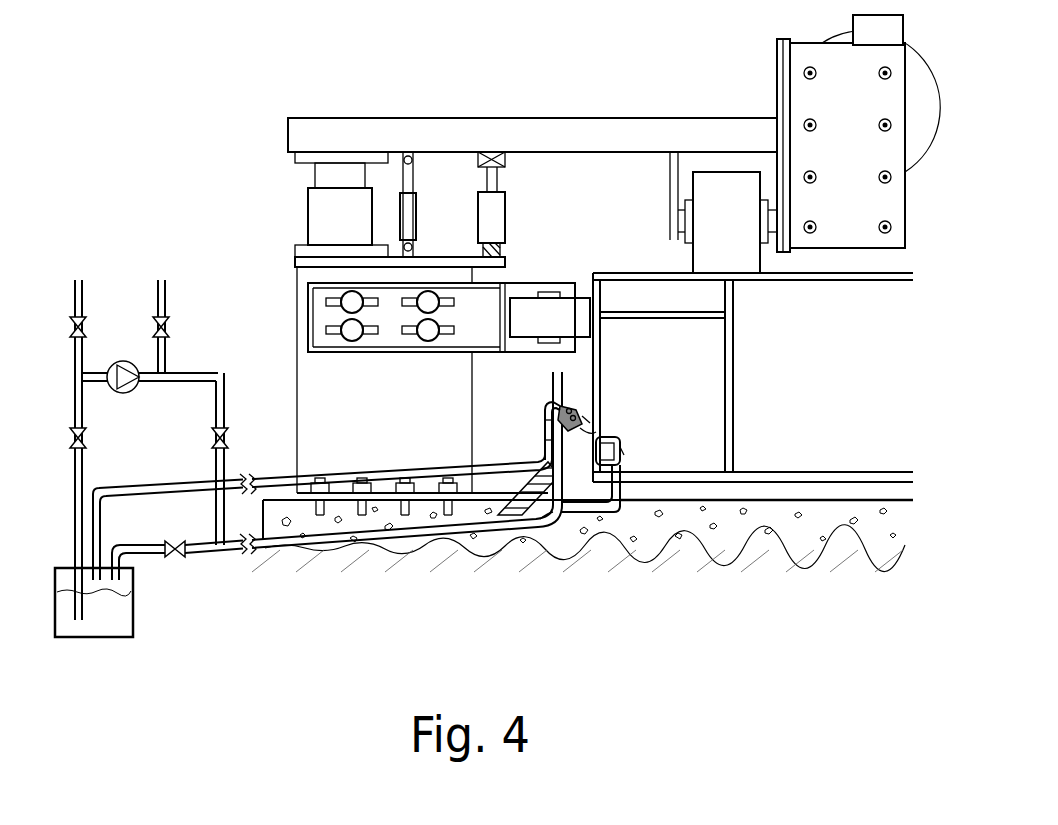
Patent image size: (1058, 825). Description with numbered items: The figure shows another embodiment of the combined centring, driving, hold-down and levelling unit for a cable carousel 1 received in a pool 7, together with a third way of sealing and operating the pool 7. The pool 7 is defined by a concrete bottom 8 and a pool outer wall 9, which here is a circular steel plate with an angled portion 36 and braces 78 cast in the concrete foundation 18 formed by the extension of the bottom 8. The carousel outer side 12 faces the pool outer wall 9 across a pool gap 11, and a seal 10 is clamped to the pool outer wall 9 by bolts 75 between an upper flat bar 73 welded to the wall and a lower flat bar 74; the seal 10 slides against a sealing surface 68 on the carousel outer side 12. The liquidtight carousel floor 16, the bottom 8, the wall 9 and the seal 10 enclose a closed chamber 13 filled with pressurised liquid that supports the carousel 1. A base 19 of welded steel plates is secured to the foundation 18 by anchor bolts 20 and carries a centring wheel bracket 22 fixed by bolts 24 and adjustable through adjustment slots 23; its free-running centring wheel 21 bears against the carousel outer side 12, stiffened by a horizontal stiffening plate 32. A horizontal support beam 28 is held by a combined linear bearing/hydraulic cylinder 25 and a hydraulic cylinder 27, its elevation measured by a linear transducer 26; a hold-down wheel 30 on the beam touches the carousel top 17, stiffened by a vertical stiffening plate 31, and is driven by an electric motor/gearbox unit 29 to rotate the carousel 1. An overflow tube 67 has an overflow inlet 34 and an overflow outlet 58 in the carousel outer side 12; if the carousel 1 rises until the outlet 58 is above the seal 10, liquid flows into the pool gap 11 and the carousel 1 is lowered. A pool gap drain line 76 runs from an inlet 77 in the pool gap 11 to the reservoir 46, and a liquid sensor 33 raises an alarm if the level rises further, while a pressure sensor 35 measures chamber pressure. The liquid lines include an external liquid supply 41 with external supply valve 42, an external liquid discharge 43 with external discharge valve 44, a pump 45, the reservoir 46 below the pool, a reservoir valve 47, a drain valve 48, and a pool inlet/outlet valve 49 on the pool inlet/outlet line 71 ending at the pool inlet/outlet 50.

The carousel 1 is at (632, 258).
The pool 7 is at (878, 485).
The concrete bottom 8 is at (748, 527).
The pool outer wall 9 is at (555, 400).
The seal 10 is at (593, 457).
The pool gap 11 is at (574, 390).
The carousel outer side 12 is at (600, 325).
The closed chamber 13 is at (793, 485).
The carousel floor 16 is at (840, 478).
The carousel top 17 is at (868, 280).
The foundation 18 is at (390, 545).
The base 19 is at (398, 433).
The anchor bolts 20 is at (448, 480).
The centring wheel 21 is at (575, 297).
The centring wheel bracket 22 is at (387, 330).
The adjustment slots 23 is at (413, 332).
The bolts 24 is at (433, 332).
The combined linear bearing/hydraulic cylinder 25 is at (320, 213).
The linear transducer 26 is at (405, 212).
The hydraulic cylinder 27 is at (495, 218).
The support beam 28 is at (458, 128).
The electric motor/gearbox unit 29 is at (800, 95).
The hold-down wheel 30 is at (703, 253).
The vertical stiffening plate 31 is at (733, 325).
The horizontal stiffening plate 32 is at (687, 318).
The liquid sensor 33 is at (552, 382).
The overflow inlet 34 is at (590, 470).
The pressure sensor 35 is at (570, 505).
The angled portion 36 is at (543, 515).
The external liquid supply 41 is at (78, 255).
The external supply valve 42 is at (72, 327).
The external liquid discharge 43 is at (161, 262).
The external discharge valve 44 is at (168, 330).
The pump 45 is at (120, 362).
The reservoir 46 is at (120, 615).
The reservoir valve 47 is at (86, 440).
The drain valve 48 is at (180, 558).
The pool inlet/outlet valve 49 is at (212, 440).
The pool inlet/outlet 50 is at (613, 503).
The overflow outlet 58 is at (586, 433).
The overflow tube 67 is at (620, 450).
The sealing surface 68 is at (586, 420).
The pool inlet/outlet line 71 is at (462, 538).
The upper flat bar 73 is at (572, 418).
The lower flat bar 74 is at (548, 420).
The bolts 75 is at (570, 410).
The pool gap drain line 76 is at (340, 477).
The inlet 77 is at (555, 404).
The braces 78 is at (523, 487).